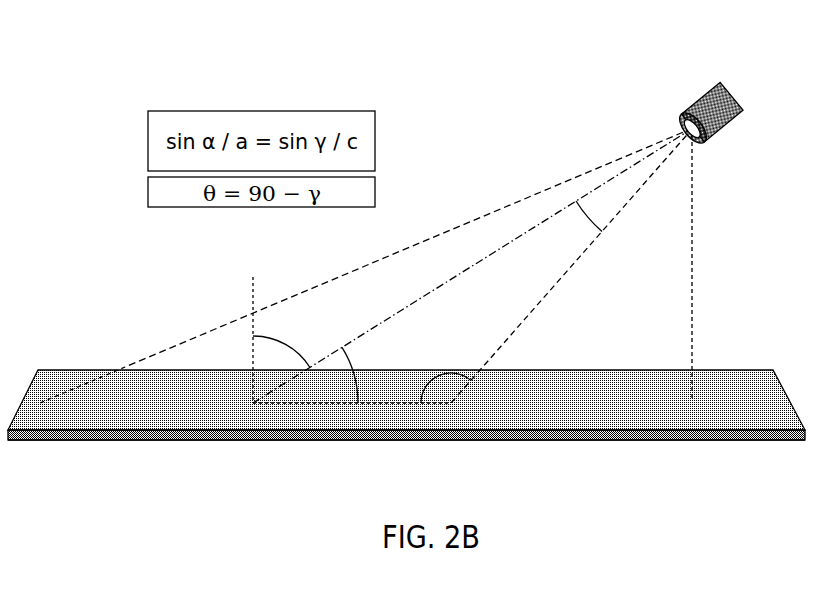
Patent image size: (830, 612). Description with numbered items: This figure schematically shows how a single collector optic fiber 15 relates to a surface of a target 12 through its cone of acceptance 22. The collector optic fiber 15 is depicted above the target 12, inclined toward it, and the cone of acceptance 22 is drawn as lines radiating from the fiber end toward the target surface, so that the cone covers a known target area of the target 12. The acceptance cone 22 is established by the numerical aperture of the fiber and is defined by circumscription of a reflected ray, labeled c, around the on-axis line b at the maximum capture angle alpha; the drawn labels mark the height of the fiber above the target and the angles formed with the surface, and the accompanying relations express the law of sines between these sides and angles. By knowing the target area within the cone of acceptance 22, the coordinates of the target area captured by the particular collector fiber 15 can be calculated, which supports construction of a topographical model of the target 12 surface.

The target 12 is at (406, 405).
The collector optic fiber 15 is at (709, 67).
The cone of acceptance 22 is at (376, 277).